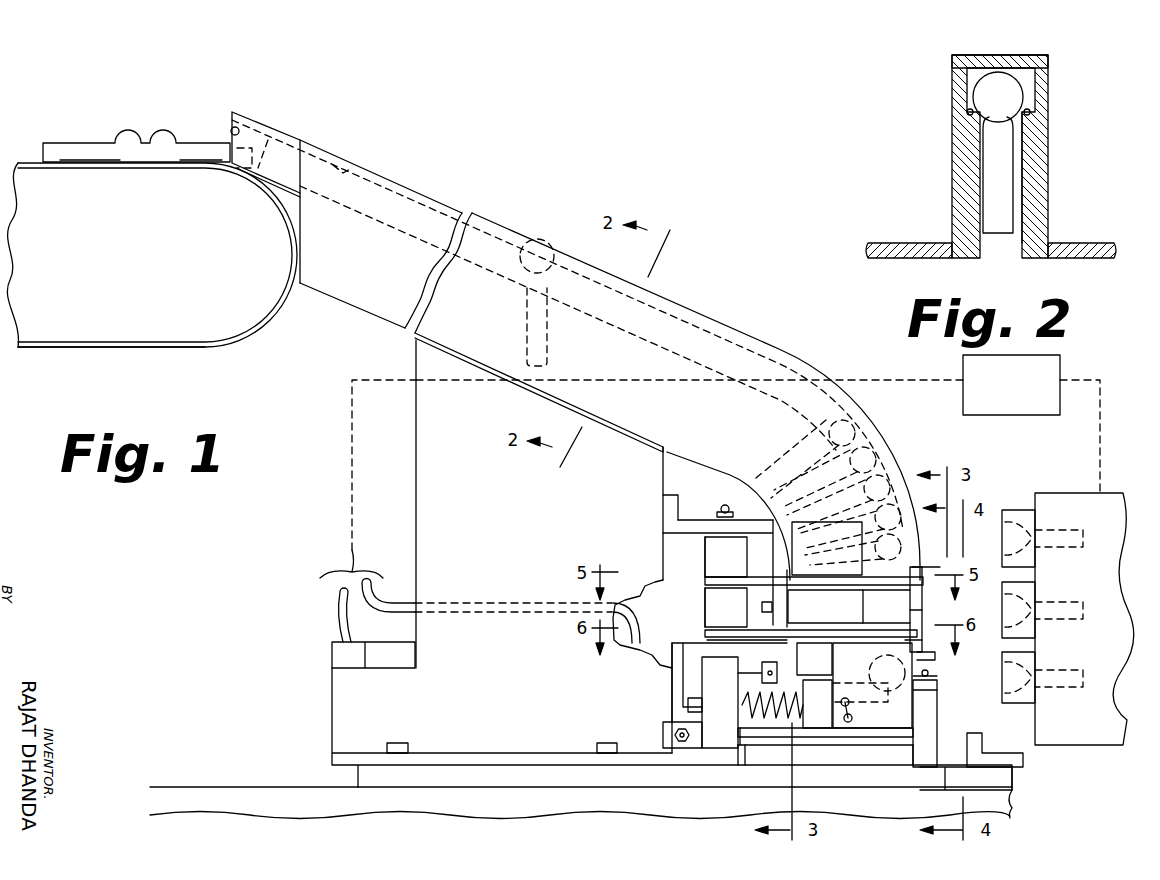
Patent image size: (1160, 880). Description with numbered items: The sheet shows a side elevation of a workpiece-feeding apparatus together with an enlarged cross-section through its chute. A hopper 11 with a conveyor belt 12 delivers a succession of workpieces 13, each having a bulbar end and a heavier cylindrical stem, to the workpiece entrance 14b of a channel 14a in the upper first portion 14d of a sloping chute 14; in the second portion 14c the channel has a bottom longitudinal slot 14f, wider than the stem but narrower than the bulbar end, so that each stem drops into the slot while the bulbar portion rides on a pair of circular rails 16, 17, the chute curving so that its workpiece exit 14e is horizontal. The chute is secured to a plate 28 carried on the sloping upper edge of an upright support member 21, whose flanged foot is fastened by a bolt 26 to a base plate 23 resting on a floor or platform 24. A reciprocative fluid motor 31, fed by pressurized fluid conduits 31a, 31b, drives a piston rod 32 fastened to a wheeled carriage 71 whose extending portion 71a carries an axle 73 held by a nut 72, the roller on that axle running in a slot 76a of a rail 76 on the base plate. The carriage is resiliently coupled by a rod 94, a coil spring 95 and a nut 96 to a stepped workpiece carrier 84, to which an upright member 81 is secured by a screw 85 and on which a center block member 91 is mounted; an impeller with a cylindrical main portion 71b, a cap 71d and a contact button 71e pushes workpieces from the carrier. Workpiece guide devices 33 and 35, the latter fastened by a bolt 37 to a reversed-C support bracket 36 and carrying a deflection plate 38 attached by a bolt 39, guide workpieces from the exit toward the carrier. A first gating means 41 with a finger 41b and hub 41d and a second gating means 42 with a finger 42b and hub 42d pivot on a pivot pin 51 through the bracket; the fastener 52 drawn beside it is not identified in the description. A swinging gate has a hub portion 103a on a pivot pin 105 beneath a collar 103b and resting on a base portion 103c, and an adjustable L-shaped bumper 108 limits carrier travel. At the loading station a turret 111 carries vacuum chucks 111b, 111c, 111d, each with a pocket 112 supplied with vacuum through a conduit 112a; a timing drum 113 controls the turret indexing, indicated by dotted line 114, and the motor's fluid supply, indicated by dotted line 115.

In FIG. 1, the hopper 11 is at (125, 264).
In FIG. 1, the conveyor belt 12 is at (120, 347).
In FIG. 1, the workpiece 13 is at (160, 146).
In FIG. 2, the workpiece 13 is at (1017, 100).
In FIG. 1, the sloping chute 14 is at (347, 268).
In FIG. 2, the sloping chute 14 is at (940, 81).
In FIG. 1, the channel 14a is at (343, 170).
In FIG. 2, the channel 14a is at (1032, 73).
In FIG. 1, the workpiece entrance 14b is at (232, 135).
In FIG. 1, the second portion of chute 14c is at (365, 300).
In FIG. 1, the upper first portion of chute 14d is at (268, 140).
In FIG. 1, the workpiece exit 14e is at (905, 613).
In FIG. 2, the longitudinal slot 14f is at (1017, 150).
In FIG. 2, the rail 16 is at (967, 112).
In FIG. 2, the rail 17 is at (1031, 112).
In FIG. 1, the upright support member 21 is at (480, 508).
In FIG. 1, the base plate 23 is at (488, 777).
In FIG. 1, the floor or platform 24 is at (417, 803).
In FIG. 1, the bolt 26 is at (400, 743).
In FIG. 1, the plate 28 is at (425, 345).
In FIG. 2, the plate 28 is at (1023, 255).
In FIG. 1, the reciprocative motor 31 is at (395, 642).
In FIG. 1, the pressurized fluid conduit 31a is at (338, 620).
In FIG. 1, the pressurized fluid conduit 31b is at (640, 625).
In FIG. 1, the piston rod 32 is at (695, 662).
In FIG. 1, the first workpiece guide device 33 is at (785, 573).
In FIG. 1, the longitudinal workpiece guide device 35 is at (919, 643).
In FIG. 1, the support bracket 36 is at (690, 526).
In FIG. 1, the bolt 37 is at (773, 607).
In FIG. 1, the workpiece deflection plate 38 is at (919, 598).
In FIG. 1, the bolt 39 is at (919, 615).
In FIG. 1, the first gating means 41 is at (713, 571).
In FIG. 1, the second finger 41b is at (897, 557).
In FIG. 1, the hub portion 41d is at (705, 550).
In FIG. 1, the second gating means 42 is at (715, 615).
In FIG. 1, the second finger 42b is at (950, 657).
In FIG. 1, the hub portion 42d is at (705, 605).
In FIG. 1, the pivot pin 51 is at (722, 506).
In FIG. 1, the fastener 52 is at (735, 508).
In FIG. 1, the wheeled carriage 71 is at (712, 682).
In FIG. 1, the extending portion 71a is at (663, 734).
In FIG. 1, the cylindrical main portion 71b is at (750, 645).
In FIG. 1, the cap 71d is at (790, 652).
In FIG. 1, the workpiece contact button 71e is at (872, 685).
In FIG. 1, the nut 72 is at (700, 728).
In FIG. 1, the axle 73 is at (690, 736).
In FIG. 1, the rail 76 is at (866, 757).
In FIG. 1, the slot 76a is at (846, 745).
In FIG. 1, the upright member 81 is at (893, 740).
In FIG. 1, the stepped workpiece carrier 84 is at (817, 704).
In FIG. 1, the screw 85 is at (853, 712).
In FIG. 1, the center block member 91 is at (827, 670).
In FIG. 1, the rod 94 is at (688, 711).
In FIG. 1, the compressible coil spring 95 is at (792, 735).
In FIG. 1, the nut 96 is at (702, 705).
In FIG. 1, the hub portion 103a is at (937, 714).
In FIG. 1, the collar 103b is at (937, 688).
In FIG. 1, the base portion 103c is at (930, 790).
In FIG. 1, the pivot pin 105 is at (929, 673).
In FIG. 1, the stop or bumper 108 is at (1025, 763).
In FIG. 1, the turret 111 is at (1110, 747).
In FIG. 1, the first vacuum chuck 111b is at (1036, 660).
In FIG. 1, the vacuum chuck 111c is at (1036, 595).
In FIG. 1, the vacuum chuck 111d is at (1036, 523).
In FIG. 1, the pocket 112 is at (1018, 700).
In FIG. 1, the conduit 112a is at (1060, 687).
In FIG. 1, the timing drum 113 is at (1060, 357).
In FIG. 1, the dotted line 114 is at (1100, 413).
In FIG. 1, the dotted line 115 is at (907, 380).